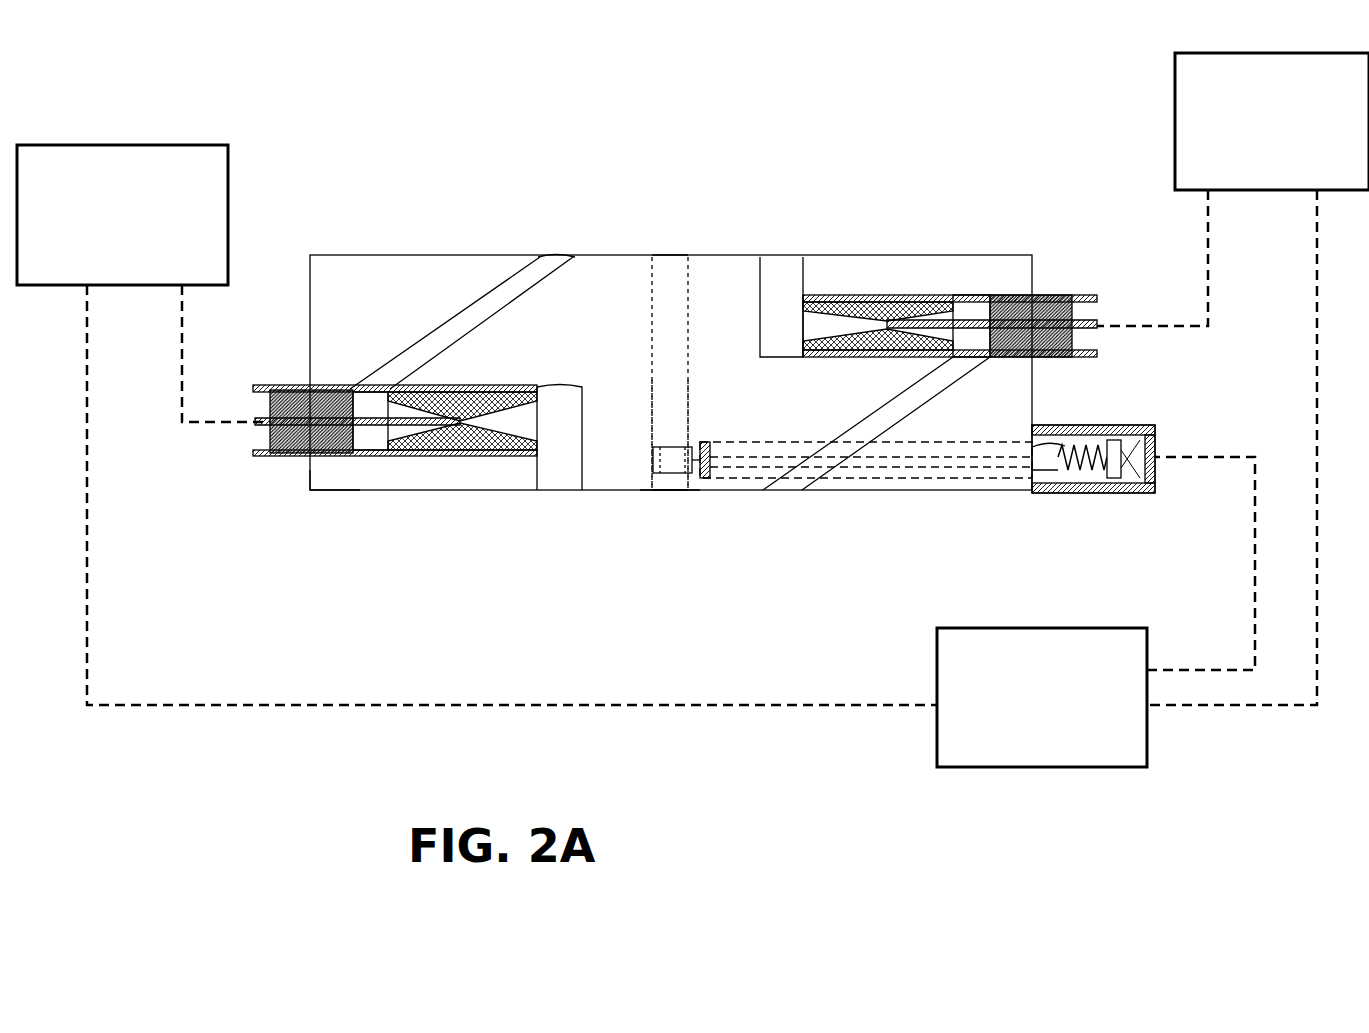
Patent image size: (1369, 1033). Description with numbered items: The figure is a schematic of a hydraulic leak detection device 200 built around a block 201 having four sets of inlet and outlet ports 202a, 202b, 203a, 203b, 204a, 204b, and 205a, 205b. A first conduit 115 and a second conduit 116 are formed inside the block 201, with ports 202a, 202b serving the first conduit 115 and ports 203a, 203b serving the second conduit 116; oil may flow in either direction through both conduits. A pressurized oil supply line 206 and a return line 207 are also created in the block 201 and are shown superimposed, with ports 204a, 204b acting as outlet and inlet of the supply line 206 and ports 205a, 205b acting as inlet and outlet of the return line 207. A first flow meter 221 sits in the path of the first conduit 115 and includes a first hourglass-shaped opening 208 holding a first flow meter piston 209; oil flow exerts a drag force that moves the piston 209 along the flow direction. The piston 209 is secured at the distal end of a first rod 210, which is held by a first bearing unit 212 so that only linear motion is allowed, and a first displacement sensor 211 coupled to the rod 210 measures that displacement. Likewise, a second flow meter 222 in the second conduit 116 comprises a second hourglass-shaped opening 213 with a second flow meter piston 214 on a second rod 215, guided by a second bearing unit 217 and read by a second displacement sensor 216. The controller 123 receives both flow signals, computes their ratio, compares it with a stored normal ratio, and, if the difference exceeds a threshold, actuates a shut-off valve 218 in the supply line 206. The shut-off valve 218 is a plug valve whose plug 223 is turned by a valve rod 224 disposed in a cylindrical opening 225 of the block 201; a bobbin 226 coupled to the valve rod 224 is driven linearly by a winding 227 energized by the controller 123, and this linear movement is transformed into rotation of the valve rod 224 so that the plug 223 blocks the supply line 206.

The hydraulic leak detection device 200 is at (489, 135).
The block 201 is at (350, 255).
The first conduit 115 is at (470, 300).
The second conduit 116 is at (805, 278).
The controller 123 is at (937, 748).
The port 202a is at (552, 258).
The port 202b is at (557, 490).
The port 203a is at (780, 258).
The port 203b is at (770, 492).
The port 204a is at (658, 257).
The port 204b is at (655, 492).
The port 205a is at (678, 257).
The port 205b is at (685, 490).
The pressurized oil supply line 206 is at (652, 380).
The return line 207 is at (688, 308).
The first hourglass-shaped opening 208 is at (430, 445).
The first flow meter piston 209 is at (462, 420).
The first rod 210 is at (372, 418).
The first displacement sensor 211 is at (163, 146).
The first bearing unit 212 is at (292, 432).
The second hourglass-shaped opening 213 is at (898, 297).
The second flow meter piston 214 is at (880, 326).
The second rod 215 is at (968, 330).
The second displacement sensor 216 is at (1175, 70).
The second bearing unit 217 is at (1045, 300).
The shut-off valve 218 is at (634, 474).
The first flow meter 221 is at (345, 474).
The second flow meter 222 is at (947, 272).
The plug 223 is at (652, 452).
The valve rod 224 is at (1047, 460).
The cylindrical opening 225 is at (893, 478).
The bobbin 226 is at (1122, 455).
The winding 227 is at (1090, 432).